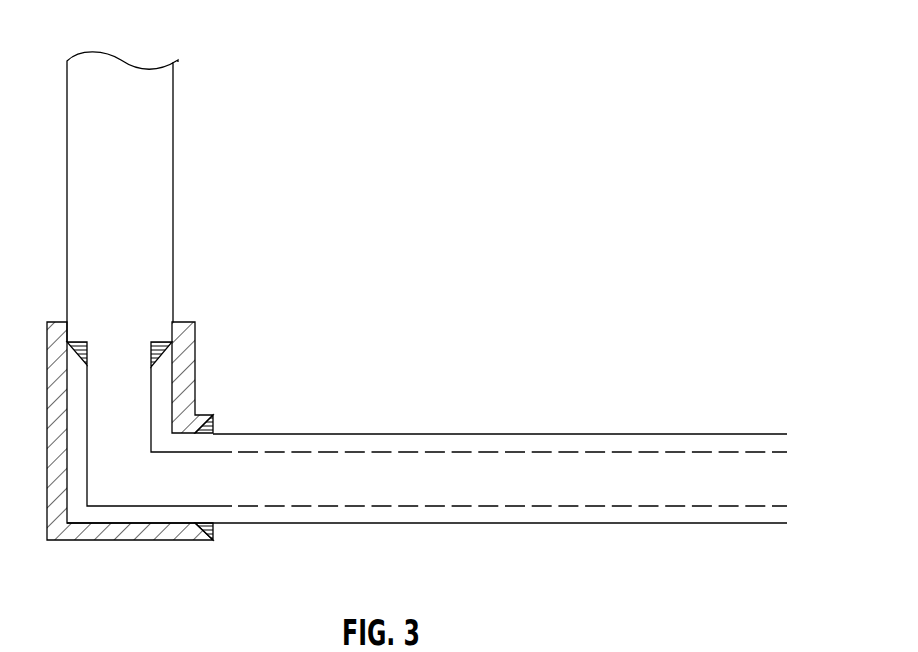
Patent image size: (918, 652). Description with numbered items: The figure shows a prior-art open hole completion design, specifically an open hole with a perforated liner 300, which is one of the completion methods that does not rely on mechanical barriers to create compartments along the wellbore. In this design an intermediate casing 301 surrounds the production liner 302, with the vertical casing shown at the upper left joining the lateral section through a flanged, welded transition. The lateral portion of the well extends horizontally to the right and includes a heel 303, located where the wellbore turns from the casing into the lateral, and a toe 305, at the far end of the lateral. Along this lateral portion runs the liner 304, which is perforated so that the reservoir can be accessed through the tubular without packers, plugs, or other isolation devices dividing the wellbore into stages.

The open hole with a perforated liner 300 is at (425, 270).
The intermediate casing 301 is at (182, 121).
The production liner 302 is at (203, 358).
The heel 303 is at (207, 411).
The liner 304 is at (492, 434).
The toe 305 is at (769, 422).